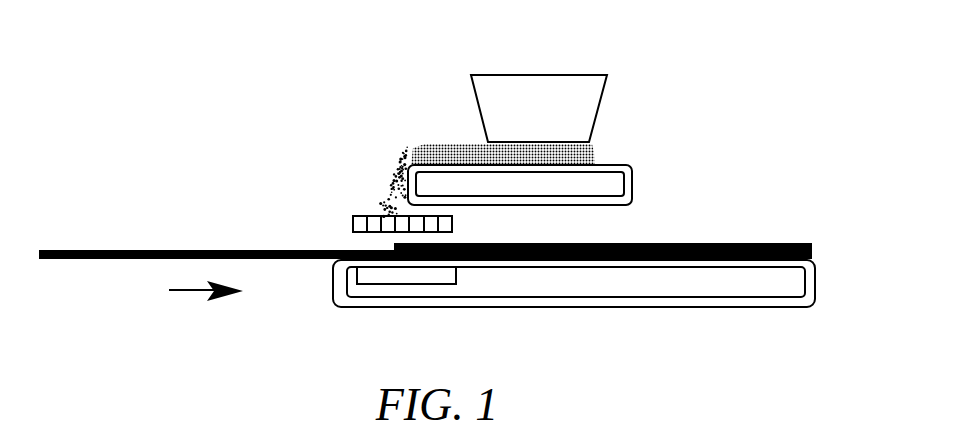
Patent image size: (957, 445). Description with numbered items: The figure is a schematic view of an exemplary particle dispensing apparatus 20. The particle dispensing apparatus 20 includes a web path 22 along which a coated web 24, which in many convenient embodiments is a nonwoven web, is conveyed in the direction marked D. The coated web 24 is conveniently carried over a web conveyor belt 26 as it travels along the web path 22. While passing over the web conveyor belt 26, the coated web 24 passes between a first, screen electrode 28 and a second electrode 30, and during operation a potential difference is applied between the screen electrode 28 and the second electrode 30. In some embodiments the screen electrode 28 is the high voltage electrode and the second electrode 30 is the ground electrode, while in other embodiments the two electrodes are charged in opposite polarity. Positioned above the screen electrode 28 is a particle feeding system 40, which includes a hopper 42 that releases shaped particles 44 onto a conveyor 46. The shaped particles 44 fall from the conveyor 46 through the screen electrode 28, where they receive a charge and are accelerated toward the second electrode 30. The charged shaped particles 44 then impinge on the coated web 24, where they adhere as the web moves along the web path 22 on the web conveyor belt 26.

The particle dispensing apparatus 20 is at (112, 62).
The web path 22 is at (73, 195).
The coated web 24 is at (203, 250).
The web conveyor belt 26 is at (659, 307).
The screen electrode 28 is at (353, 224).
The second electrode 30 is at (456, 276).
The particle feeding system 40 is at (577, 55).
The hopper 42 is at (601, 97).
The shaped particles 44 is at (597, 148).
The conveyor 46 is at (633, 183).